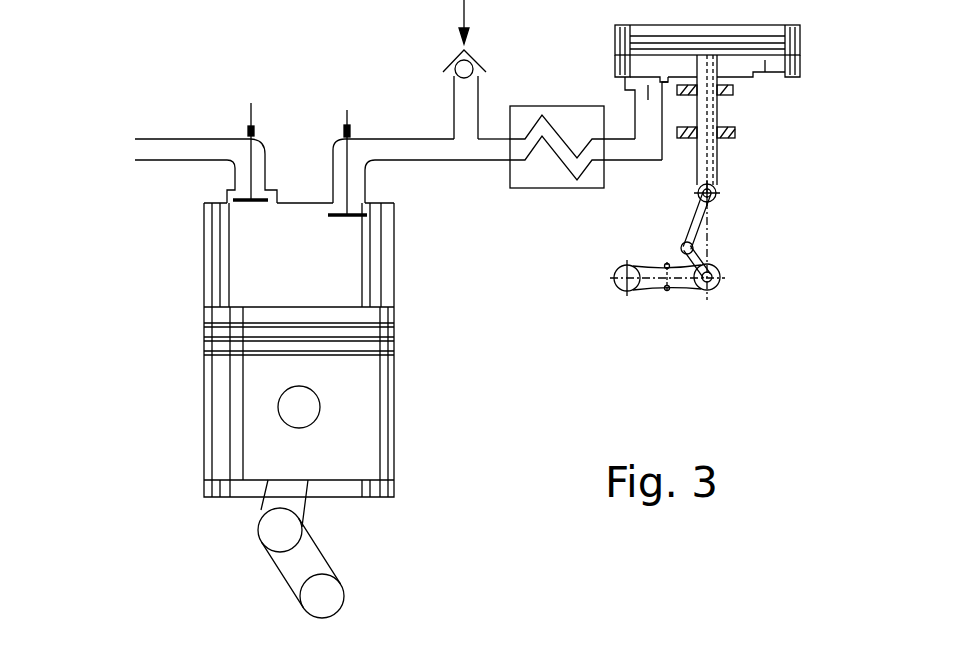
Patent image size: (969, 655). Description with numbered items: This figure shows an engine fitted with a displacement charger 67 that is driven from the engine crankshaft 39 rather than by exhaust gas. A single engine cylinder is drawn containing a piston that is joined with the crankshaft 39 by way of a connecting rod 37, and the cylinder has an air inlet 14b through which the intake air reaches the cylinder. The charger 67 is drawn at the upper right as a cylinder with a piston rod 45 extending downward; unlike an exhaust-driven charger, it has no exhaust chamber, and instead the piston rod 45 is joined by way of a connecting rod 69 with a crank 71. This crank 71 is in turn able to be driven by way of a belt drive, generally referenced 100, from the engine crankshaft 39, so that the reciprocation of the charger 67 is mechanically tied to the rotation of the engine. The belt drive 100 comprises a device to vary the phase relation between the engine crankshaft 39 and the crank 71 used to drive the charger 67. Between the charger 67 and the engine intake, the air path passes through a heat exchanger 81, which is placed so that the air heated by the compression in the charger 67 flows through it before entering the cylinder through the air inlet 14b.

The air inlet 14b is at (350, 157).
The connecting rod 37 is at (268, 503).
The crankshaft 39 is at (620, 290).
The piston rod 45 is at (715, 106).
The charger 67 is at (618, 33).
The connecting rod 69 is at (692, 222).
The crank 71 is at (710, 250).
The heat exchanger 81 is at (590, 180).
The belt drive 100 is at (651, 291).